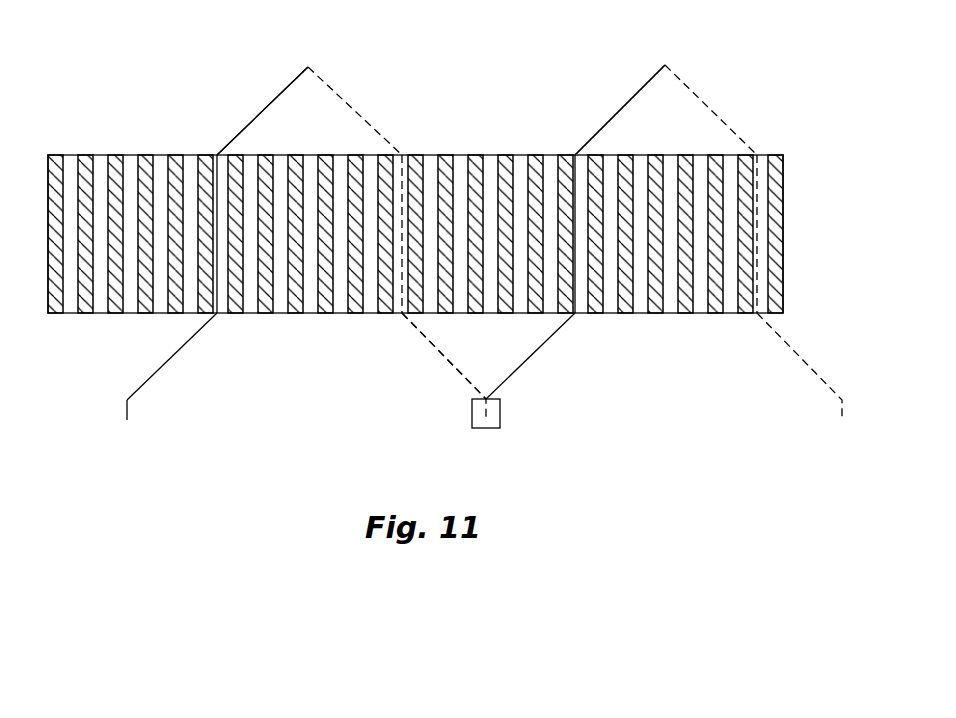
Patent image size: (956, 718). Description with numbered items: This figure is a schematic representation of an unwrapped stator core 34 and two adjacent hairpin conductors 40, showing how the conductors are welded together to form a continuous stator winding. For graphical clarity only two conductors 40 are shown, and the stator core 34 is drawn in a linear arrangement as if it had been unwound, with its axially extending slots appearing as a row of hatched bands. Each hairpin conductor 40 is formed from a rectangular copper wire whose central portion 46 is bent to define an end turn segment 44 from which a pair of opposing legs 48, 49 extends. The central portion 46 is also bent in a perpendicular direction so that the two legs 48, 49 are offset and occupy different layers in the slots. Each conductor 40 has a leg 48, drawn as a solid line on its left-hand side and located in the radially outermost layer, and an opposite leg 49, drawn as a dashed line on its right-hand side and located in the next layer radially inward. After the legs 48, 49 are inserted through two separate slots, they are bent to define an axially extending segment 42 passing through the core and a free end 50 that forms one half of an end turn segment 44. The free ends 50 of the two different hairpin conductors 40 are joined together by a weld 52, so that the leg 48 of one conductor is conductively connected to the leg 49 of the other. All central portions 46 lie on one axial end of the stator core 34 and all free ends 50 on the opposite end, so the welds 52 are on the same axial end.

The stator core 34 is at (122, 153).
The hairpin conductor 40 is at (272, 102).
The axially extending segment 42 is at (402, 276).
The end turn segment 44 is at (351, 106).
The central portion 46 is at (289, 85).
The leg 48 is at (204, 329).
The opposite leg 49 is at (432, 344).
The free end 50 is at (168, 362).
The weld 52 is at (501, 413).